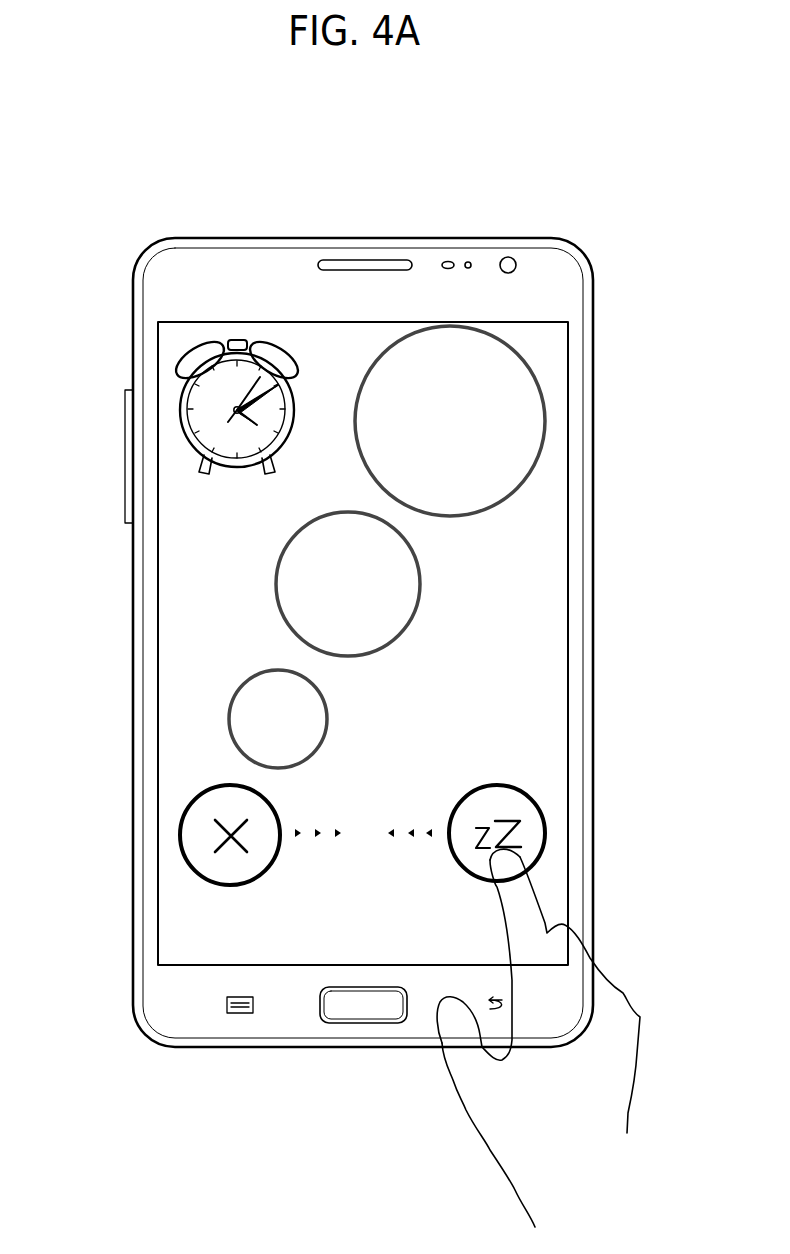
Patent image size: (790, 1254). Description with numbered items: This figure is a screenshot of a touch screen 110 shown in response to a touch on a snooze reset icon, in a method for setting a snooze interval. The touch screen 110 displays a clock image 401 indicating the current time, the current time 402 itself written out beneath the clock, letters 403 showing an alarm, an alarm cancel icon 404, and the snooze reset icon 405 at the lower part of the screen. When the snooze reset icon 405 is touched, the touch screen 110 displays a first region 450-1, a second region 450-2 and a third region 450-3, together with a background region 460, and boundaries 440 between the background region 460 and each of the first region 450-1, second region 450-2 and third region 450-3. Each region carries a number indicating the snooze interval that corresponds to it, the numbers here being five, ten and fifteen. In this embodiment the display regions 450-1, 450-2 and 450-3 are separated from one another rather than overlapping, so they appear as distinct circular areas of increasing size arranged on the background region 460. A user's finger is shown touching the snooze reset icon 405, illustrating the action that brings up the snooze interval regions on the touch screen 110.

The touch screen 110 is at (543, 763).
The clock image 401 is at (192, 340).
The current time 402 is at (186, 522).
The letters showing an alarm 403 is at (205, 558).
The alarm cancel icon 404 is at (183, 833).
The snooze reset icon 405 is at (543, 833).
The boundaries 440 is at (547, 422).
The first region 450-1 is at (245, 710).
The second region 450-2 is at (312, 597).
The third region 450-3 is at (510, 395).
The background region 460 is at (182, 922).